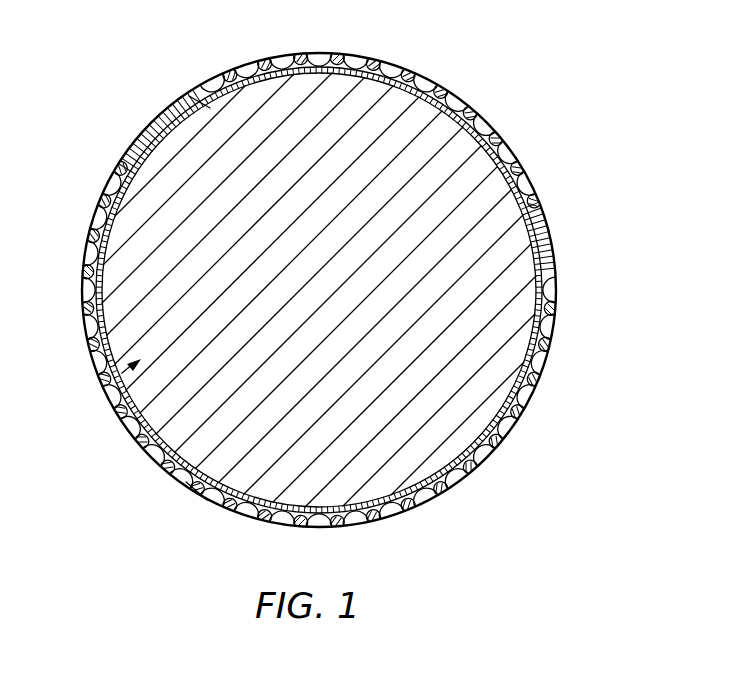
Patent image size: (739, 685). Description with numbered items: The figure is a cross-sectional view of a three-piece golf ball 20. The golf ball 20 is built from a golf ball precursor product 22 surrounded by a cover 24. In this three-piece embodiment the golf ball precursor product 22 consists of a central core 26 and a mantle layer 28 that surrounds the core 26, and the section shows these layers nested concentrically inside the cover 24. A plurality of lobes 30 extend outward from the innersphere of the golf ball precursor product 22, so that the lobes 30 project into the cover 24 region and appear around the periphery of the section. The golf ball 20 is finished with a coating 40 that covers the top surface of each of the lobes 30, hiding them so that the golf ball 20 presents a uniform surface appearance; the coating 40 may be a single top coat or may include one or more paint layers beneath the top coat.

The golf ball 20 is at (466, 55).
The golf ball precursor product 22 is at (110, 392).
The cover 24 is at (513, 150).
The core 26 is at (155, 445).
The mantle layer 28 is at (198, 98).
The lobes 30 is at (152, 122).
The coating 40 is at (193, 487).